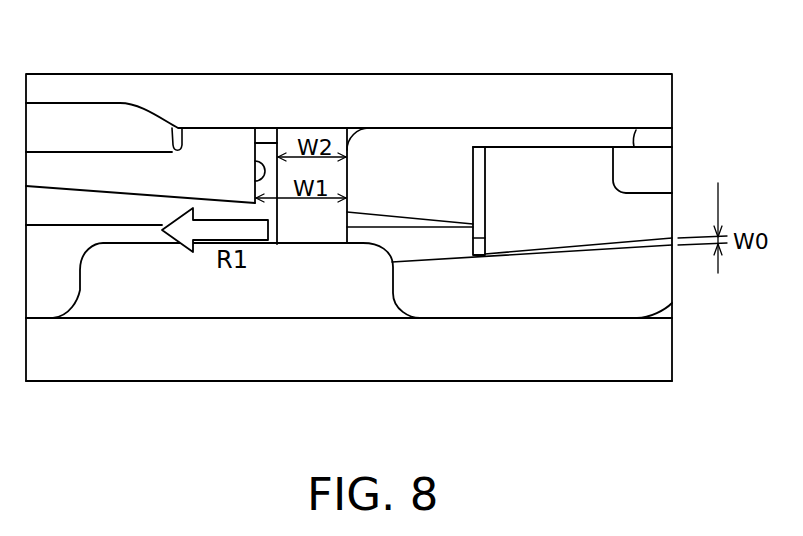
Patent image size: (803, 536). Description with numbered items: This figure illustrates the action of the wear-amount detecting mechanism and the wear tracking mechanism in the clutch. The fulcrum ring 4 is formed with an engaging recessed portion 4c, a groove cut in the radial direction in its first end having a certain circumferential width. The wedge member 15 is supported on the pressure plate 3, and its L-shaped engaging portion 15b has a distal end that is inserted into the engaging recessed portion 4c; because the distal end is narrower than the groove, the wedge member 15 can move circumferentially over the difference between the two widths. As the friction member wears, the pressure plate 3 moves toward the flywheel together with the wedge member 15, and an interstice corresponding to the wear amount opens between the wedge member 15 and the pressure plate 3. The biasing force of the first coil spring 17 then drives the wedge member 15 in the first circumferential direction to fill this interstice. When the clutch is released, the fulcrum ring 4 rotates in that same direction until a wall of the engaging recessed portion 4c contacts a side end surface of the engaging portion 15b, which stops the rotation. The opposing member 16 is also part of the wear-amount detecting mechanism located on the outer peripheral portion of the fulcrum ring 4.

The pressure plate 3 is at (92, 364).
The fulcrum ring 4 is at (430, 155).
The engaging recessed portion 4c is at (253, 181).
The wedge member 15 is at (447, 321).
The engaging portion 15b is at (340, 178).
The opposing member 16 is at (548, 141).
The first coil spring 17 is at (70, 125).